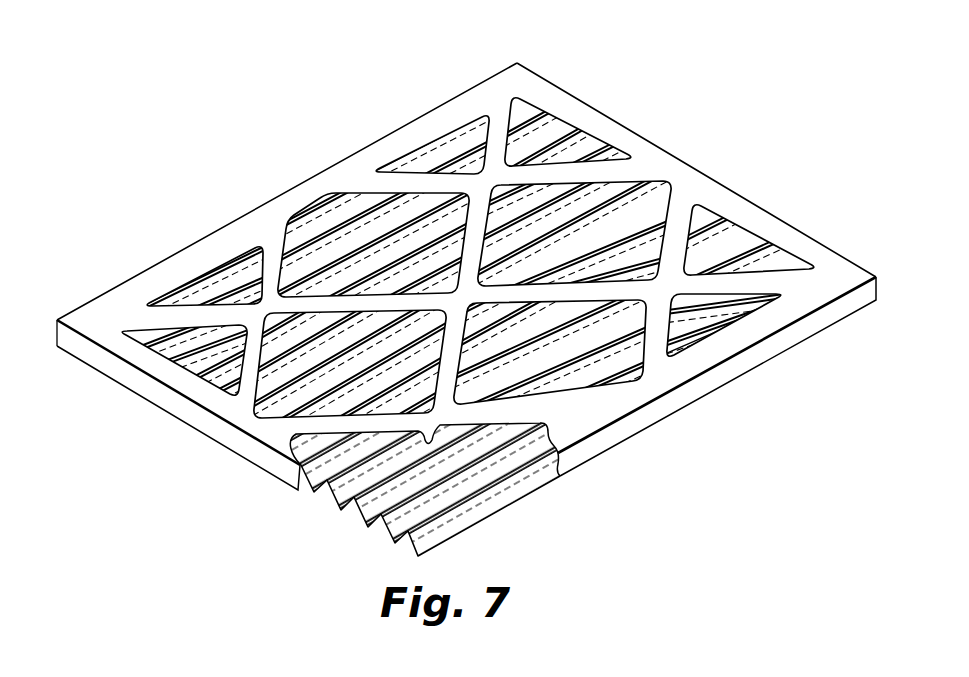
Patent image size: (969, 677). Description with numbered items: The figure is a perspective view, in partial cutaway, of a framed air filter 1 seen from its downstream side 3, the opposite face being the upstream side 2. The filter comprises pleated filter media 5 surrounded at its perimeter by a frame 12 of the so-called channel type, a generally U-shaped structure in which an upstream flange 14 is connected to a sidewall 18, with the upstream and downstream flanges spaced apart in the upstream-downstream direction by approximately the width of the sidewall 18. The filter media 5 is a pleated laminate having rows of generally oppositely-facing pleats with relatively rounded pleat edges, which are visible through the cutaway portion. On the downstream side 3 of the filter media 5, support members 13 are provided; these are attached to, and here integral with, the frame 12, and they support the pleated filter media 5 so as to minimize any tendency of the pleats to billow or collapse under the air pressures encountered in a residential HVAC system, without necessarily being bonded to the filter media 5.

The framed air filter 1 is at (466, 282).
The upstream side 2 is at (468, 307).
The downstream side 3 is at (466, 248).
The filter media 5 is at (508, 492).
The frame 12 is at (117, 300).
The support members 13 is at (470, 218).
The upstream flange 14 is at (250, 224).
The sidewall 18 is at (195, 415).